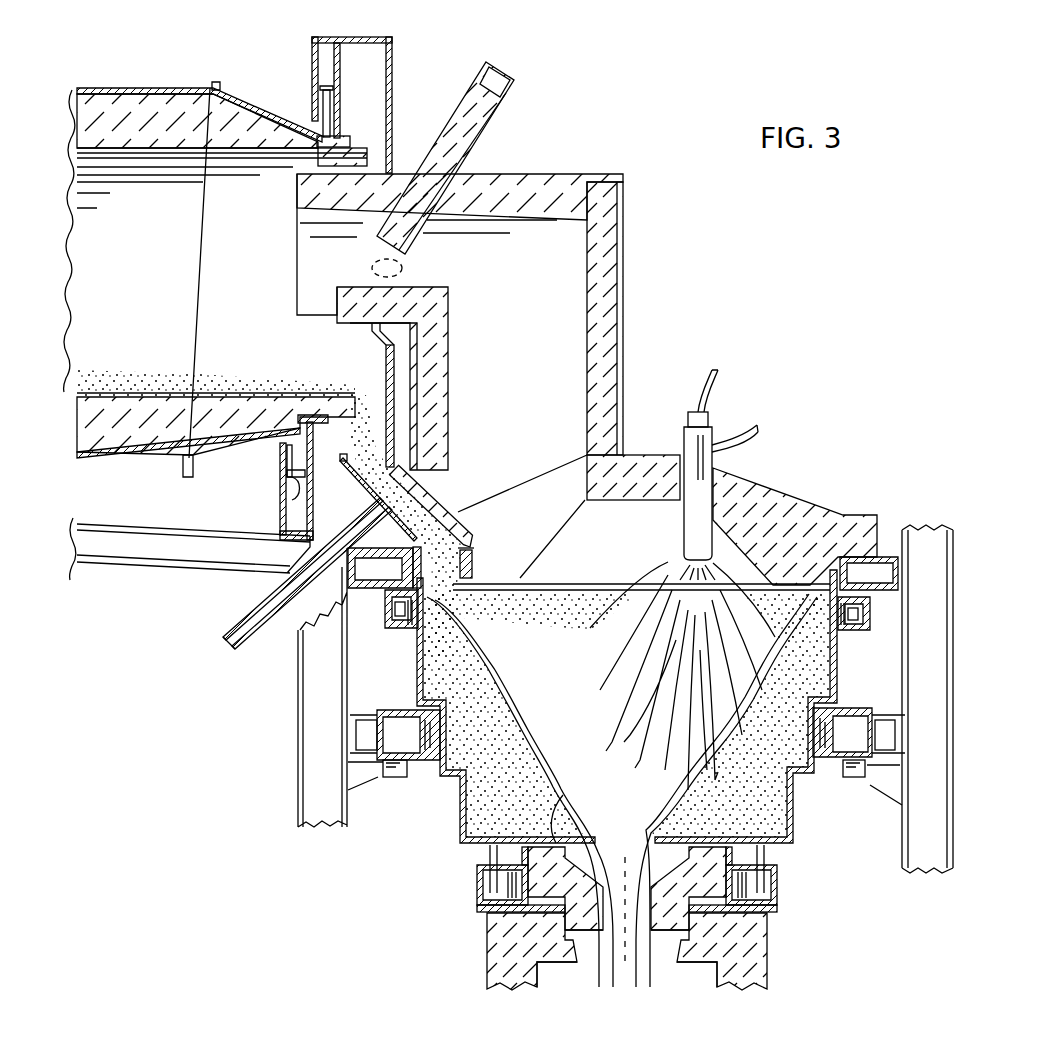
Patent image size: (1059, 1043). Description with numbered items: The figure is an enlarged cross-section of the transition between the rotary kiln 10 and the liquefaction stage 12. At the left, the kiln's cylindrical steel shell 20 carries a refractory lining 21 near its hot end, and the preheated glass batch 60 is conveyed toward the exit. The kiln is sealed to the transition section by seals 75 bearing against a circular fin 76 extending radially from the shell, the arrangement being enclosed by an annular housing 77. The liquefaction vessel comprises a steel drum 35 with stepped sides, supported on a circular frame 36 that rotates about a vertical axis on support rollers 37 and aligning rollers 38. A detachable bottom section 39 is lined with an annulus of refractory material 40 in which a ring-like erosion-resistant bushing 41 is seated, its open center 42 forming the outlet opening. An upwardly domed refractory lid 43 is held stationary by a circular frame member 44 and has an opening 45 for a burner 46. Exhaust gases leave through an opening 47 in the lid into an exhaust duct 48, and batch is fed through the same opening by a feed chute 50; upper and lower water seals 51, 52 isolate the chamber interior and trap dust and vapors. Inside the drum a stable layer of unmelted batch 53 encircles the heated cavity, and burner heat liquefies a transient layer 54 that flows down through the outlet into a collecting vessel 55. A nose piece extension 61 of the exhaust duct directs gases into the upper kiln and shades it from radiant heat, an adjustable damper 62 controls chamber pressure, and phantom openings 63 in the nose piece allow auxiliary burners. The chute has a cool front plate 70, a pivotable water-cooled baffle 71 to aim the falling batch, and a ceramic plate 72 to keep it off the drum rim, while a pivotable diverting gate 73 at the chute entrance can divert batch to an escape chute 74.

The rotary kiln 10 is at (122, 78).
The liquefaction stage 12 is at (878, 432).
The cylindrical steel shell 20 is at (160, 90).
The refractory lining 21 is at (198, 110).
The steel drum 35 is at (790, 820).
The circular frame 36 is at (820, 760).
The support rollers 37 is at (390, 778).
The aligning rollers 38 is at (362, 728).
The bottom section 39 is at (707, 913).
The refractory material 40 is at (657, 962).
The bushing 41 is at (553, 800).
The open center 42 is at (612, 845).
The refractory lid 43 is at (775, 486).
The circular frame member 44 is at (887, 553).
The opening 45 is at (690, 465).
The burner 46 is at (718, 448).
The opening 47 is at (530, 530).
The exhaust duct 48 is at (623, 375).
The feed chute 50 is at (474, 527).
The upper water seal 51 is at (385, 620).
The lower water seal 52 is at (477, 880).
The stable layer of unmelted batch 53 is at (462, 628).
The transient layer 54 is at (500, 667).
The vessel 55 is at (487, 970).
The glass batch 60 is at (350, 392).
The nose piece extension 61 is at (297, 284).
The adjustable damper 62 is at (495, 100).
The openings 63 is at (403, 268).
The cool front plate 70 is at (448, 517).
The pivotable water-cooled baffle 71 is at (472, 556).
The ceramic plate 72 is at (417, 545).
The pivotable diverting gate 73 is at (365, 483).
The escape chute 74 is at (258, 637).
The seals 75 is at (327, 88).
The circular fin 76 is at (337, 118).
The annular housing 77 is at (362, 35).